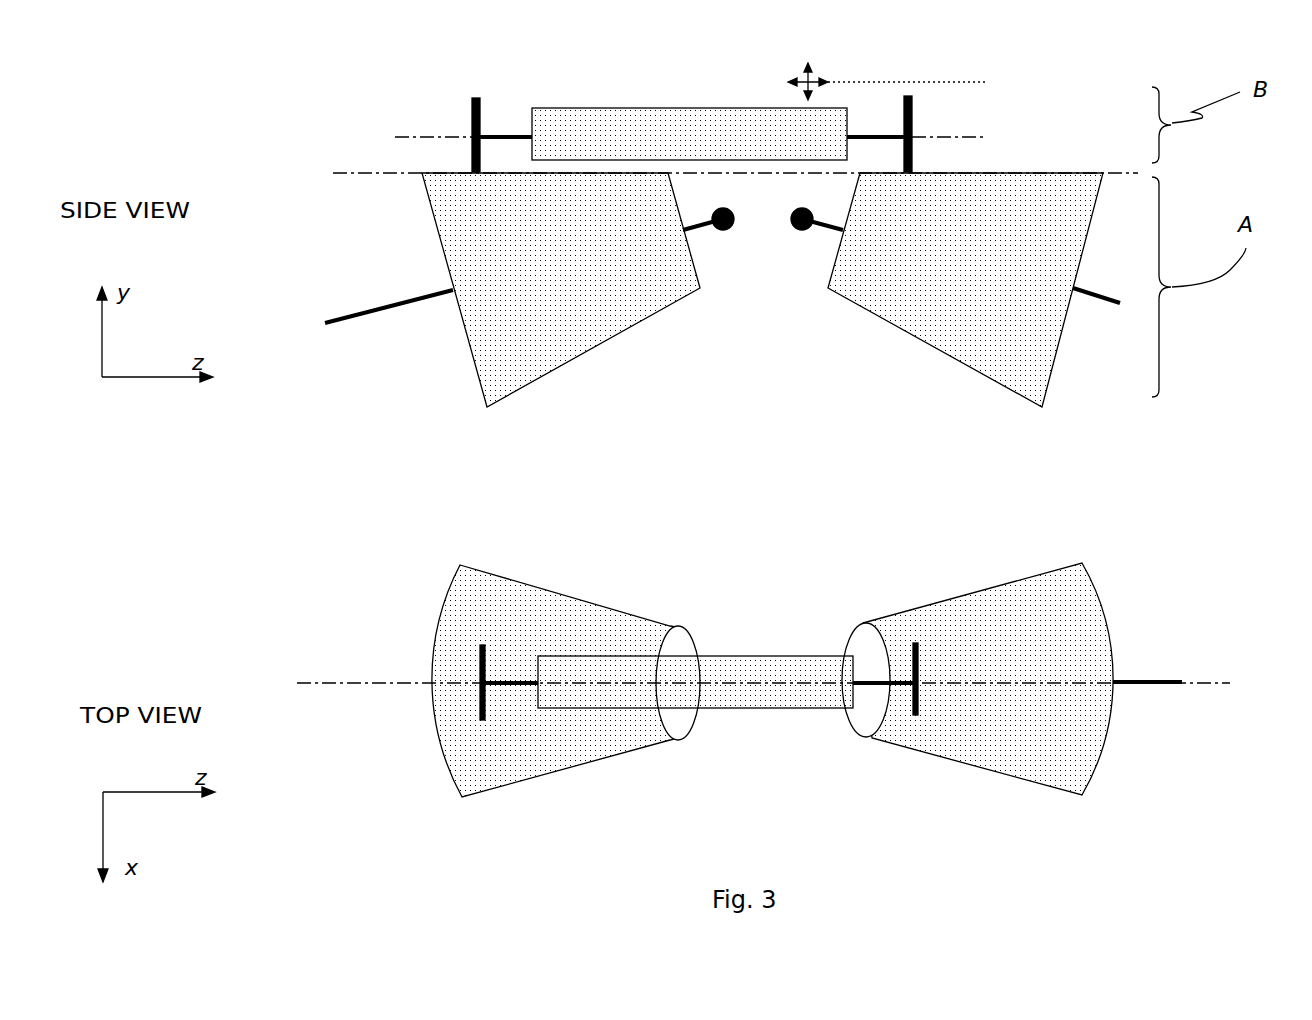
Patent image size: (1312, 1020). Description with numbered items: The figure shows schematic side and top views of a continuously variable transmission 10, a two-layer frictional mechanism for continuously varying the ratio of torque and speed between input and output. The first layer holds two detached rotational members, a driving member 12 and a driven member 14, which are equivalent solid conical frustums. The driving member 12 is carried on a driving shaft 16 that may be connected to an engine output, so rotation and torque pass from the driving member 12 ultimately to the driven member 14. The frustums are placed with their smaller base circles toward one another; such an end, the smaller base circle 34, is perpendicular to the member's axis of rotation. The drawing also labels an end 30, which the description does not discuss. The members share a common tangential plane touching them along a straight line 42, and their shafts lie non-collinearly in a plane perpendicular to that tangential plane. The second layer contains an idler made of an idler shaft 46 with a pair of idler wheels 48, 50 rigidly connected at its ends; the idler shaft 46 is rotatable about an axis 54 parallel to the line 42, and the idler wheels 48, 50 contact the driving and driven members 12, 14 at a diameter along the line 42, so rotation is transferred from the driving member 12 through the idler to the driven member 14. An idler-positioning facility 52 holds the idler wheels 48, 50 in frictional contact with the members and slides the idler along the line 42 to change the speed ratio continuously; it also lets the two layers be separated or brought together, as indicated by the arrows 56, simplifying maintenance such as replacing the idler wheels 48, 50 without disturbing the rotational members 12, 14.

The continuously variable transmission 10 is at (268, 63).
The driving member 12 is at (708, 308).
The driven member 14 is at (822, 300).
The driving shaft 16 is at (380, 315).
The end face of first body 30 is at (678, 722).
The smaller base circle 34 is at (862, 715).
The straight line 42 is at (343, 175).
The idler shaft 46 is at (870, 133).
The idler wheel 48 is at (473, 100).
The idler wheel 50 is at (912, 105).
The idler-positioning facility 52 is at (608, 128).
The axis 54 is at (415, 137).
The arrows 56 is at (818, 70).